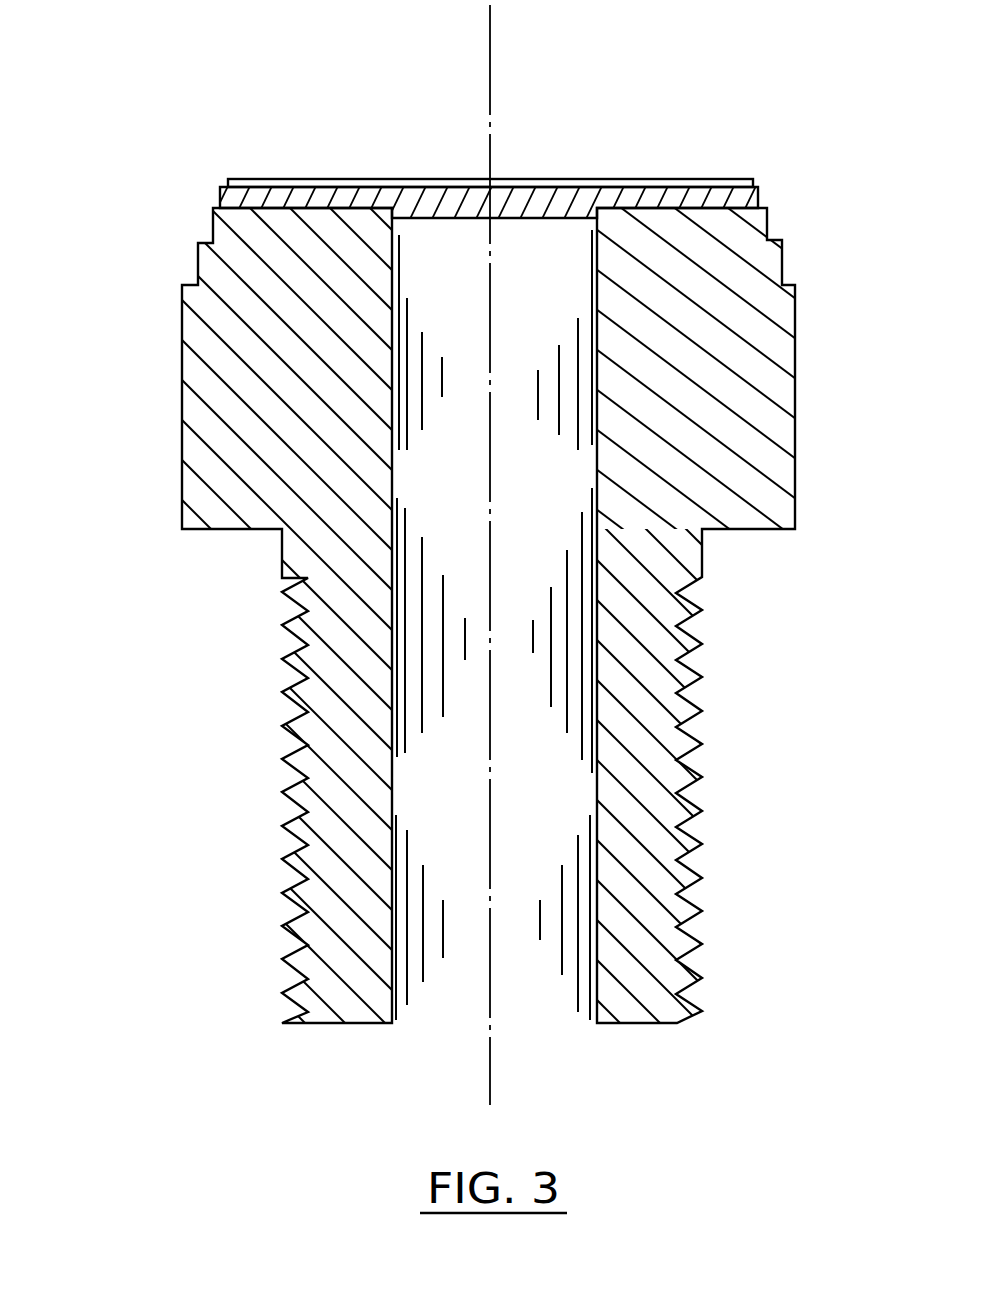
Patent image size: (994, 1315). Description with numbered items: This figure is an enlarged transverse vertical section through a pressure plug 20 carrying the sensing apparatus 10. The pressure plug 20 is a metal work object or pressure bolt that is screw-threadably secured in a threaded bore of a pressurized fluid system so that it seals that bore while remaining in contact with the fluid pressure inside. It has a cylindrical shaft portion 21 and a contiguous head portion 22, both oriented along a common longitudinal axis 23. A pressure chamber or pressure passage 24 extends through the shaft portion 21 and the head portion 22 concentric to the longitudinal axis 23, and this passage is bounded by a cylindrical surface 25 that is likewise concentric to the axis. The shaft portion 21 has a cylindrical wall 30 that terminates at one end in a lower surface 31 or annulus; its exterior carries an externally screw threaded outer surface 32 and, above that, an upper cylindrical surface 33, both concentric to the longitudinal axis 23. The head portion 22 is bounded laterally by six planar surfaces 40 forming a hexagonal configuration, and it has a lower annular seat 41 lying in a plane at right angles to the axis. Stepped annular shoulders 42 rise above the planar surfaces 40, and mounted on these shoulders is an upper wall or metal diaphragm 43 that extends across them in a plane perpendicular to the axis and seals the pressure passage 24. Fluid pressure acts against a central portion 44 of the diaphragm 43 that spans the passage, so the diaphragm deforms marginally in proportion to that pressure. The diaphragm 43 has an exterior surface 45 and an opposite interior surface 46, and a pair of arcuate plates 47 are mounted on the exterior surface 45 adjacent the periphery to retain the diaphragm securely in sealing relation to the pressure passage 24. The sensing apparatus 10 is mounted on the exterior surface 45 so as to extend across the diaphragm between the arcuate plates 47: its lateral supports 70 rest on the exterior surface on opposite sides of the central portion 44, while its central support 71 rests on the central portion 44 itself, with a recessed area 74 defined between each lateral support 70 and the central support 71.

The sensing apparatus 10 is at (384, 148).
The pressure plug 20 is at (160, 502).
The cylindrical shaft portion 21 is at (292, 766).
The head portion 22 is at (182, 383).
The longitudinal axis 23 is at (493, 76).
The pressure passage 24 is at (548, 673).
The cylindrical surface 25 is at (392, 979).
The cylindrical wall 30 is at (646, 806).
The lower surface 31 is at (628, 1026).
The externally screw threaded outer surface 32 is at (291, 886).
The upper cylindrical surface 33 is at (283, 549).
The planar surfaces 40 is at (182, 430).
The shoulder 41 is at (749, 531).
The stepped annular shoulders 42 is at (210, 218).
The metal diaphragm 43 is at (621, 207).
The central portion 44 is at (531, 205).
The exterior surface 45 is at (589, 205).
The interior surface 46 is at (472, 212).
The arcuate plates 47 is at (290, 184).
The lateral supports 70 is at (283, 205).
The central support 71 is at (497, 202).
The recessed area 74 is at (408, 216).